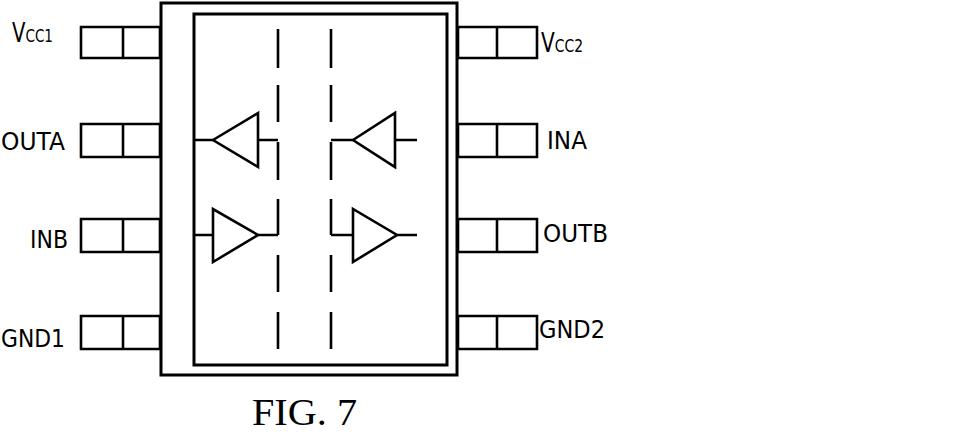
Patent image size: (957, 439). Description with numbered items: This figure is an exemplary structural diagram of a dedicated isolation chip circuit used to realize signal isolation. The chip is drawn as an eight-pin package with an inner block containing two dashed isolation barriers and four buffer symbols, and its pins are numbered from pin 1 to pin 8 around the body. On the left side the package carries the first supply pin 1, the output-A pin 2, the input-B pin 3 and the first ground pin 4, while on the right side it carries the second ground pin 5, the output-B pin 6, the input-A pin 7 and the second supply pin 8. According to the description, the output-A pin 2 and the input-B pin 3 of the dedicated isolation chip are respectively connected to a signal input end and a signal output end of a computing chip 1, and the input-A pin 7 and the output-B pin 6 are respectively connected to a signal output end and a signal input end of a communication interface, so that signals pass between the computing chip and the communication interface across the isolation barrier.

The computing chip 1 is at (130, 42).
The pin 2 (OUTA) 2 is at (130, 140).
The pin 3 (INB) 3 is at (130, 235).
The pin 4 (GND1) 4 is at (130, 332).
The pin 5 (GND2) 5 is at (482, 332).
The pin 6 (OUTB) 6 is at (482, 235).
The pin 7 (INA) 7 is at (482, 140).
The pin 8 (VCC2) 8 is at (482, 42).